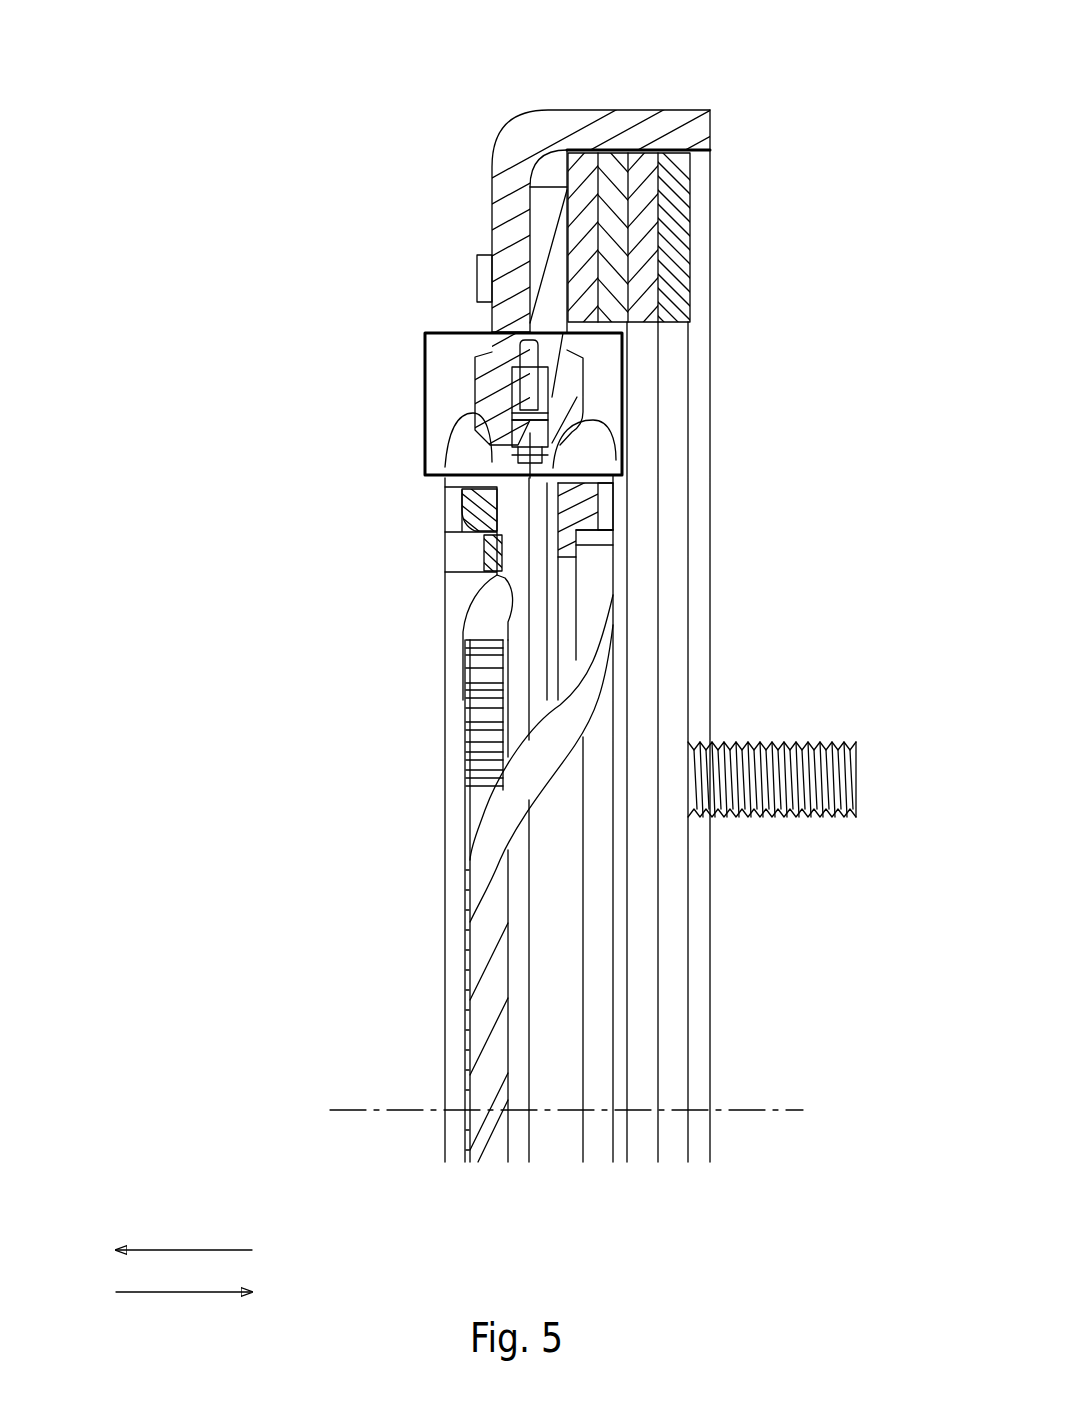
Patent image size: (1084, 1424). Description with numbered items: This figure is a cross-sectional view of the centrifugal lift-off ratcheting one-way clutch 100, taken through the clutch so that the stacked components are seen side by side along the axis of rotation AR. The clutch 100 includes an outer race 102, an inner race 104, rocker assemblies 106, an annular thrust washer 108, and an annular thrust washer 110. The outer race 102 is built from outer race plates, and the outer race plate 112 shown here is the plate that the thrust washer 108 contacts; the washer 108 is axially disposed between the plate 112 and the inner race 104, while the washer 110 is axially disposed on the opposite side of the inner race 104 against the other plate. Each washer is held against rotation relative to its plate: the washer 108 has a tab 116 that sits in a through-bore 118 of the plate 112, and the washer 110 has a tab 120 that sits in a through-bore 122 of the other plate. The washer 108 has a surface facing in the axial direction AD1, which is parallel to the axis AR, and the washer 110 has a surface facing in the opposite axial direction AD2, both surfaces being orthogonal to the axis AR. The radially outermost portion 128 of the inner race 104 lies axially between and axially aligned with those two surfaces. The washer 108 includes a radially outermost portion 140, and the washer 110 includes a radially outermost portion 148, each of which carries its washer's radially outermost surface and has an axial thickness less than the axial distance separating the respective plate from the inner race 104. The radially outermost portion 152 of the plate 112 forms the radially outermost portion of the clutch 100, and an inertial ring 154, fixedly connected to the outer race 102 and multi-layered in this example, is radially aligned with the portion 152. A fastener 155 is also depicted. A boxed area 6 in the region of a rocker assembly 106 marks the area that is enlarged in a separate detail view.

The centrifugal lift-off ratcheting one-way clutch 100 is at (688, 66).
The outer race 102 is at (528, 93).
The inner race 104 is at (466, 619).
The rocker assembly 106 is at (560, 377).
The annular thrust washer 108 is at (502, 557).
The annular thrust washer 110 is at (580, 546).
The outer race plate 112 is at (645, 106).
The tab 116 is at (483, 551).
The through-bore 118 is at (447, 494).
The tab 120 is at (590, 497).
The through-bore 122 is at (606, 517).
The radially outermost portion 128 is at (508, 478).
The radially outermost portion 140 is at (490, 440).
The radially outermost portion 148 is at (567, 448).
The radially outermost portion 152 is at (676, 118).
The inertial ring 154 is at (690, 224).
The fastener 155 is at (483, 254).
The area 6 is at (438, 333).
The axis of rotation AR is at (778, 1110).
The axial direction AD1 is at (158, 1250).
The axial direction AD2 is at (178, 1292).